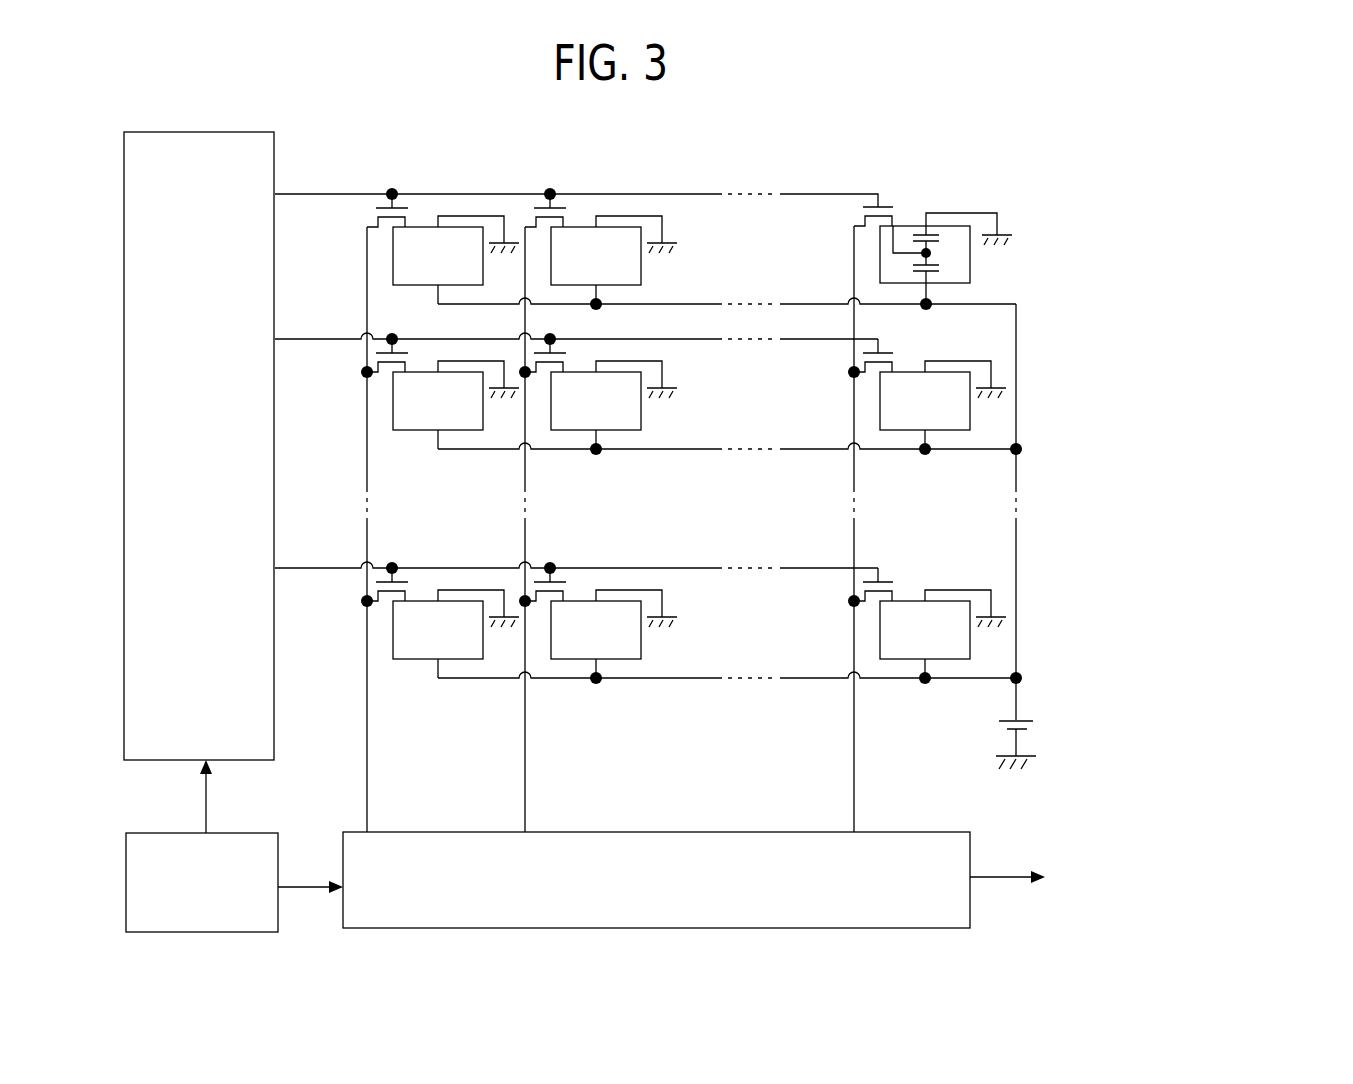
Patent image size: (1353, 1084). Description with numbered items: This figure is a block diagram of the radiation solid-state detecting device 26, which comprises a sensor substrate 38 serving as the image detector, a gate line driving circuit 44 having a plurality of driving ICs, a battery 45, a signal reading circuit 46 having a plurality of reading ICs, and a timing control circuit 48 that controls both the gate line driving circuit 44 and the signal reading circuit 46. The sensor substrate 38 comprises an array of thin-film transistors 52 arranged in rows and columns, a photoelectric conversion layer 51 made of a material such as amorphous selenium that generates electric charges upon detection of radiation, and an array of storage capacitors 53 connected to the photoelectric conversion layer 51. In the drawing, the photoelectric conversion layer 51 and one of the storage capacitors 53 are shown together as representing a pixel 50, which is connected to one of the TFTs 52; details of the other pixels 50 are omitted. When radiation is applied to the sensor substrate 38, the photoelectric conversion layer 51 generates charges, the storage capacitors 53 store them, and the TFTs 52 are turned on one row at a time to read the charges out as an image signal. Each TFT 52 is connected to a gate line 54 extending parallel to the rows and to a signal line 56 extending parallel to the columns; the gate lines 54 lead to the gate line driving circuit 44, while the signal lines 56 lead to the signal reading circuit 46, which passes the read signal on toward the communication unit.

The radiation solid-state detecting device 26 is at (1128, 397).
The sensor substrate 38 is at (648, 478).
The gate line driving circuit 44 is at (243, 132).
The battery 45 is at (1031, 712).
The signal reading circuit 46 is at (939, 831).
The timing control circuit 48 is at (246, 833).
The pixel 50 is at (640, 278).
The photoelectric conversion layer 51 is at (958, 266).
The thin-film transistor 52 is at (861, 210).
The storage capacitor 53 is at (943, 237).
The gate line 54 is at (815, 192).
The signal line 56 is at (853, 256).